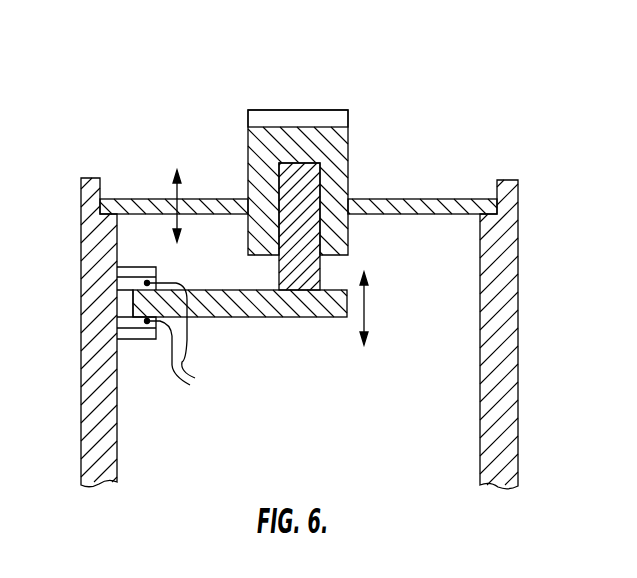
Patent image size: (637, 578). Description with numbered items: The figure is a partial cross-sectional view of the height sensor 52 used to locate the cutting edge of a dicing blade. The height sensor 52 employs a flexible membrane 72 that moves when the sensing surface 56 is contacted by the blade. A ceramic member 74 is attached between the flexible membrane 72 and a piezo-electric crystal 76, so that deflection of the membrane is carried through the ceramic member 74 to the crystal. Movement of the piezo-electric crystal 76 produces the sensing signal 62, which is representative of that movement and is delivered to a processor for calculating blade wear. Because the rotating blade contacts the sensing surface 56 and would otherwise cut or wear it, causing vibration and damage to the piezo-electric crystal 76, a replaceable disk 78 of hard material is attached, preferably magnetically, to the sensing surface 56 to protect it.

The height sensor 52 is at (145, 138).
The sensing surface 56 is at (277, 125).
The disk 78 is at (318, 113).
The ceramic member 74 is at (313, 178).
The flexible membrane 72 is at (455, 198).
The piezo-electric crystal 76 is at (290, 302).
The sensing signal 62 is at (185, 367).